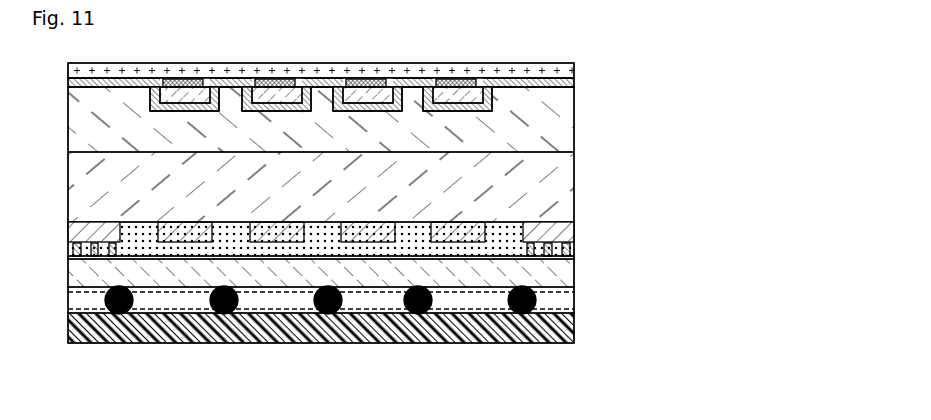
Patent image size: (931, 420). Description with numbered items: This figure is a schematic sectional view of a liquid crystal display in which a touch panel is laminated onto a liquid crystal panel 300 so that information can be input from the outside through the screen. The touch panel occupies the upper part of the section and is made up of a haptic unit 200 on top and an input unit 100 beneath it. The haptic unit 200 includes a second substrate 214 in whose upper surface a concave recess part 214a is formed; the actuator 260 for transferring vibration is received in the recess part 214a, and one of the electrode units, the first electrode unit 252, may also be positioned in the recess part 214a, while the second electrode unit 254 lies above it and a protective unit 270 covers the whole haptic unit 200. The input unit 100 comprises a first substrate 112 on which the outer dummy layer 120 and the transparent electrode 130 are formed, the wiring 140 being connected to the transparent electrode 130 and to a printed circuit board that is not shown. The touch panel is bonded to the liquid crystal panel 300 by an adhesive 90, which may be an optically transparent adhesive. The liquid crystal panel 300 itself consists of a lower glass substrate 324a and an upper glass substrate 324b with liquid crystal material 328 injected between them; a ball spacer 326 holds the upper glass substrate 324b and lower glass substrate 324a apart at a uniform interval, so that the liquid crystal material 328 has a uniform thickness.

The input unit 100 is at (66, 152).
The haptic unit 200 is at (66, 63).
The liquid crystal panel 300 is at (66, 259).
The protective unit 270 is at (563, 72).
The first electrode unit 252 is at (574, 84).
The second electrode unit 254 is at (456, 78).
The actuator 260 is at (493, 92).
The recess part 214a is at (493, 103).
The second substrate 214 is at (574, 143).
The first substrate 112 is at (574, 182).
The transparent electrode 130 is at (483, 222).
The outer dummy layer 120 is at (574, 228).
The wiring 140 is at (574, 247).
The adhesive 90 is at (517, 258).
The upper glass substrate 324b is at (563, 277).
The liquid crystal material 328 is at (574, 304).
The ball spacer 326 is at (523, 317).
The lower glass substrate 324a is at (574, 328).